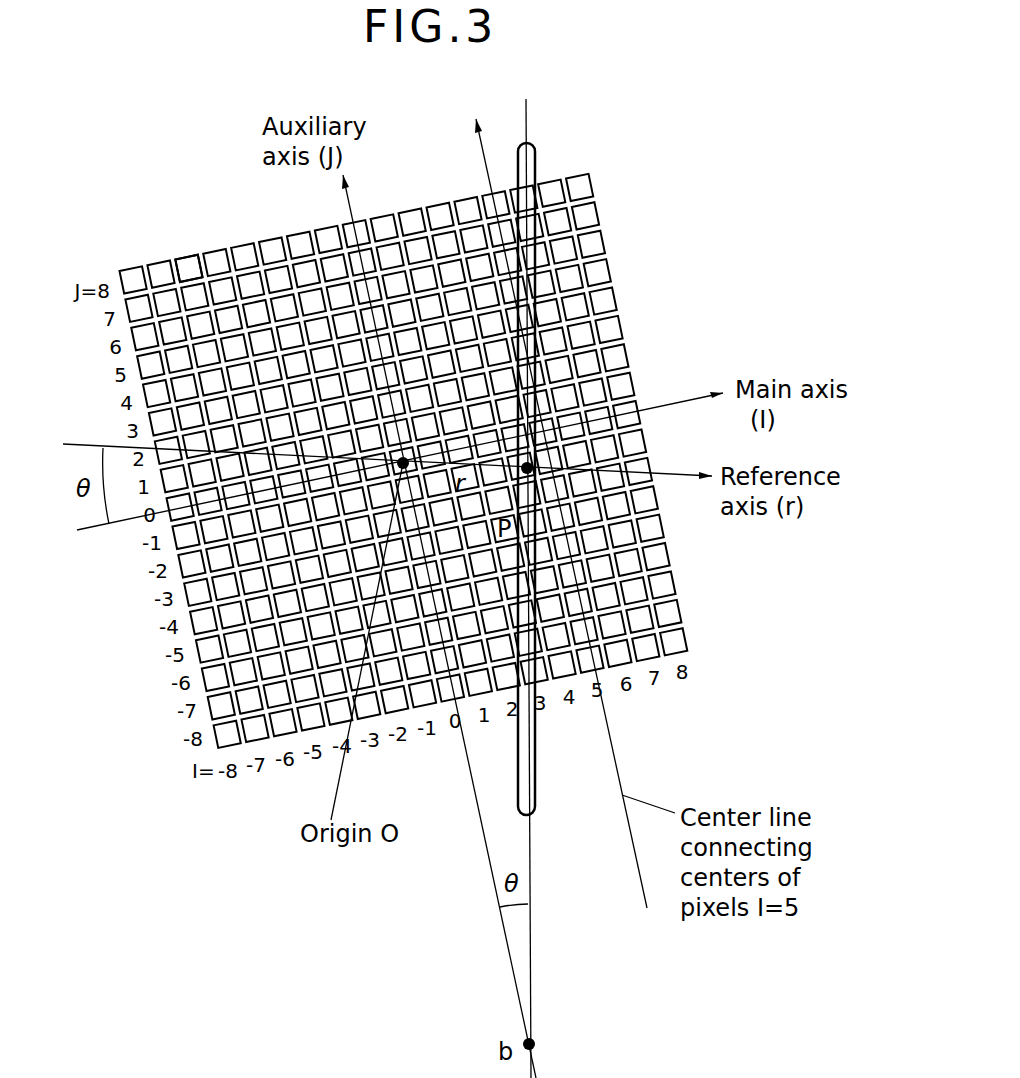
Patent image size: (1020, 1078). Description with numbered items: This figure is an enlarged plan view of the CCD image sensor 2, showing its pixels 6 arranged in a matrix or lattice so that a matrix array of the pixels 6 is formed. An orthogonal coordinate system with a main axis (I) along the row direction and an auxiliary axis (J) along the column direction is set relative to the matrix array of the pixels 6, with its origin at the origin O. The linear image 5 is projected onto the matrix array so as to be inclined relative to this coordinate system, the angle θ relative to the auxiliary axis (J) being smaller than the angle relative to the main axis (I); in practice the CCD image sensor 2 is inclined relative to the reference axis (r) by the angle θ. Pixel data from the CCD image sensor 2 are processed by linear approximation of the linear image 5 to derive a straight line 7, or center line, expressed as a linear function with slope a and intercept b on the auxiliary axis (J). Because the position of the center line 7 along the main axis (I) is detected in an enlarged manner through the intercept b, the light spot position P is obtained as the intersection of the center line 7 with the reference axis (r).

The CCD image sensor 2 is at (627, 287).
The linear image 5 is at (535, 157).
The pixel 6 is at (183, 267).
The straight line 7 is at (528, 113).